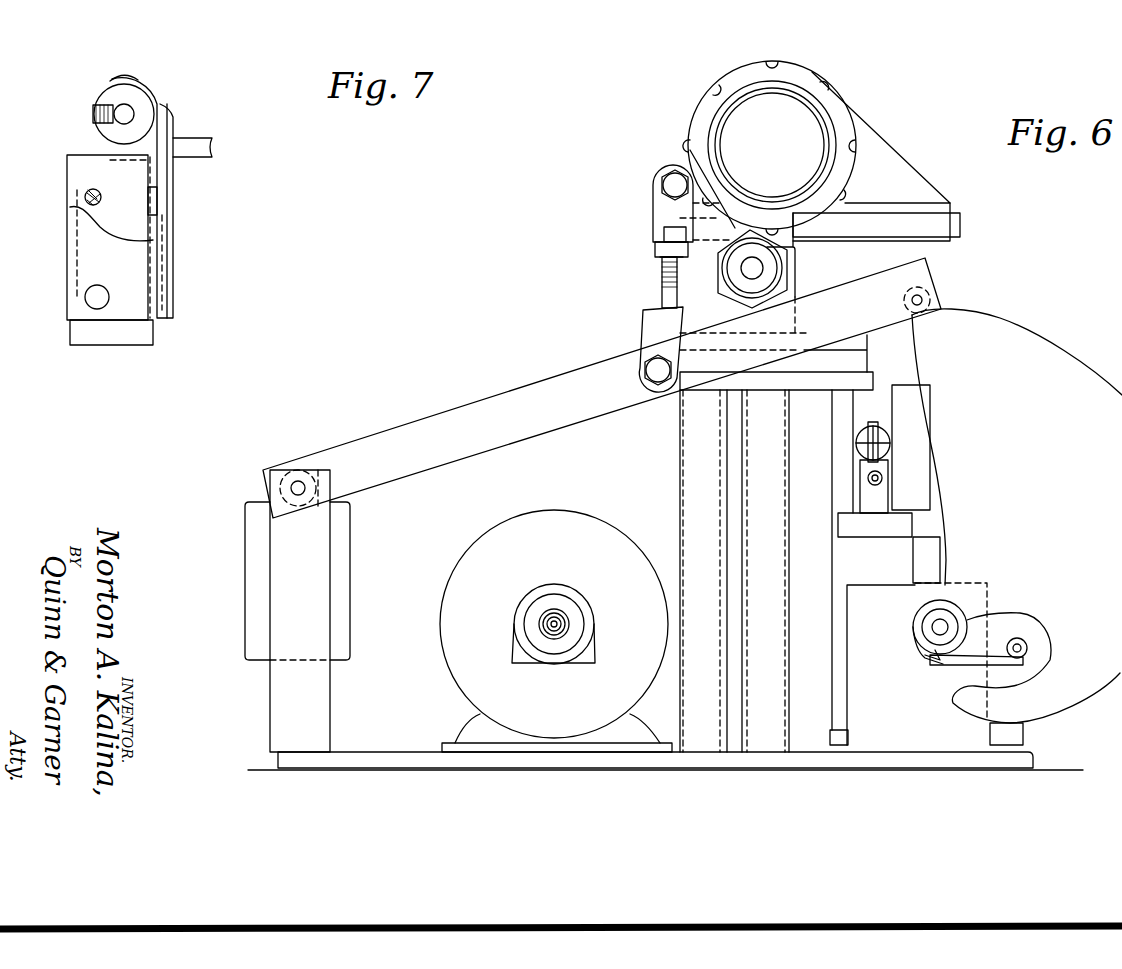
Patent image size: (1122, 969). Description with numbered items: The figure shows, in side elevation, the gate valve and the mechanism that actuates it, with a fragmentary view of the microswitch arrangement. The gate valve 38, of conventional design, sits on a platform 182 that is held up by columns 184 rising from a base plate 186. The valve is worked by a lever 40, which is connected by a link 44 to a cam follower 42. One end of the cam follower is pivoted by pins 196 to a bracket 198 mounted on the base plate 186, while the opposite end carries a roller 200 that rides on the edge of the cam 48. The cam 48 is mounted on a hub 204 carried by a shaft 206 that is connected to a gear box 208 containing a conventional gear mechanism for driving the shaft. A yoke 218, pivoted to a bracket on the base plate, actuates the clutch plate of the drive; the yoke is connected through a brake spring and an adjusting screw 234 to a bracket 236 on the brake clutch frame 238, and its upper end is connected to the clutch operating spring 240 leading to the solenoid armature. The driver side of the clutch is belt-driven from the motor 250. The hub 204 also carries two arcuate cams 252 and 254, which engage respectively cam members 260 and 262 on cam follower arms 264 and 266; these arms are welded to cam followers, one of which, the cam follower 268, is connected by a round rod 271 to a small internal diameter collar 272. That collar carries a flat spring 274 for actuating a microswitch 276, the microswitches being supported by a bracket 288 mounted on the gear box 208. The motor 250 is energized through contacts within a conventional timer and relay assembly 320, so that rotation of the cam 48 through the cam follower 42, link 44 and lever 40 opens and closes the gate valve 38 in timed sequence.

In FIG. 6, the gate valve 38 is at (880, 165).
In FIG. 6, the lever 40 is at (684, 170).
In FIG. 6, the cam follower 42 is at (528, 384).
In FIG. 6, the link 44 is at (660, 276).
In FIG. 6, the cam 48 is at (1070, 345).
In FIG. 6, the platform 182 is at (860, 376).
In FIG. 6, the columns 184 is at (686, 435).
In FIG. 6, the base plate 186 is at (882, 755).
In FIG. 6, the pins 196 is at (300, 480).
In FIG. 6, the bracket 198 is at (312, 535).
In FIG. 6, the roller 200 is at (945, 290).
In FIG. 6, the hub 204 is at (962, 622).
In FIG. 6, the shaft 206 is at (945, 620).
In FIG. 6, the gear box 208 is at (895, 610).
In FIG. 6, the yoke 218 is at (878, 440).
In FIG. 6, the adjusting screw 234 is at (886, 475).
In FIG. 6, the bracket 236 is at (880, 495).
In FIG. 6, the brake clutch frame 238 is at (895, 530).
In FIG. 6, the clutch operating spring 240 is at (875, 425).
In FIG. 6, the motor 250 is at (548, 512).
In FIG. 6, the arcuate cam 252 is at (925, 655).
In FIG. 6, the arcuate cam 254 is at (920, 612).
In FIG. 6, the cam member 260 is at (935, 665).
In FIG. 6, the cam member 262 is at (967, 654).
In FIG. 6, the cam follower arm 264 is at (985, 668).
In FIG. 7, the cam follower arm 266 is at (213, 142).
In FIG. 6, the cam follower arm 266 is at (962, 634).
In FIG. 6, the cam follower 268 is at (1022, 650).
In FIG. 7, the round rod 271 is at (95, 114).
In FIG. 6, the round rod 271 is at (1030, 648).
In FIG. 7, the collar 272 is at (130, 84).
In FIG. 7, the flat spring 274 is at (153, 96).
In FIG. 7, the microswitch 276 is at (150, 230).
In FIG. 7, the bracket 288 is at (165, 272).
In FIG. 6, the timer and relay assembly 320 is at (250, 506).